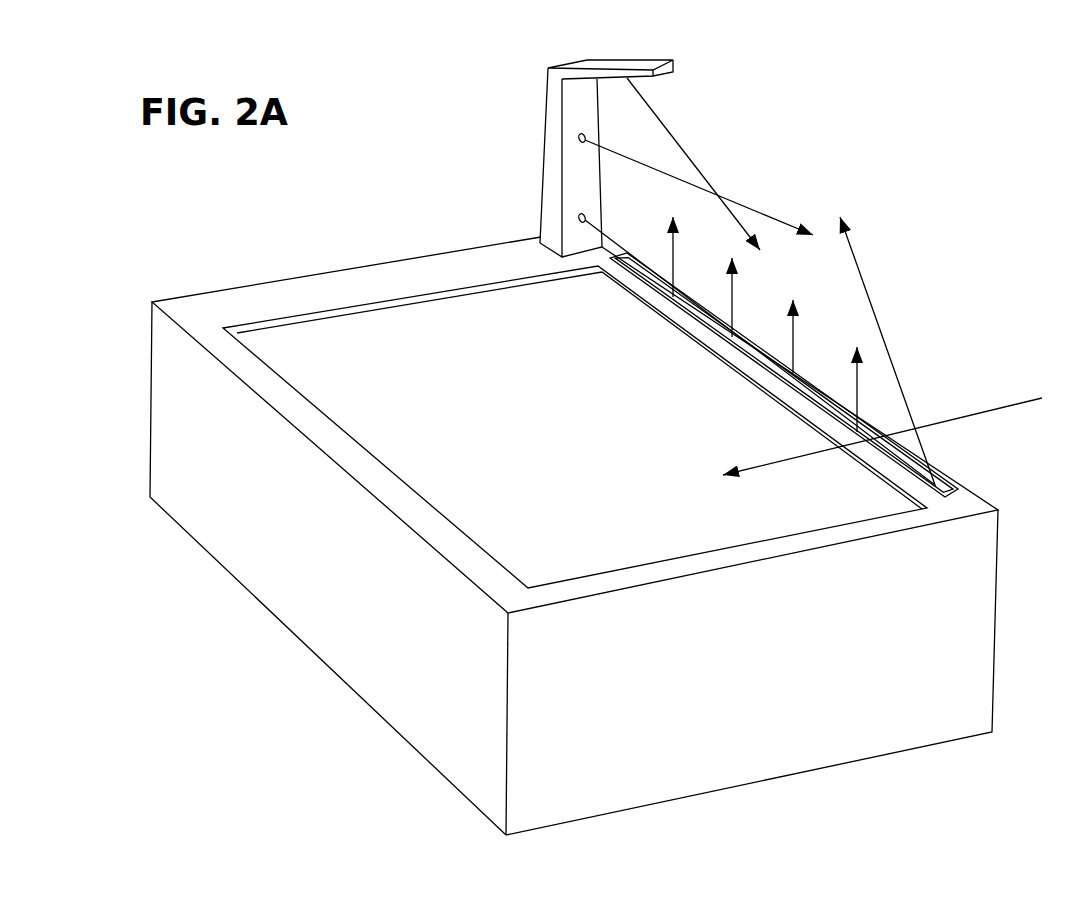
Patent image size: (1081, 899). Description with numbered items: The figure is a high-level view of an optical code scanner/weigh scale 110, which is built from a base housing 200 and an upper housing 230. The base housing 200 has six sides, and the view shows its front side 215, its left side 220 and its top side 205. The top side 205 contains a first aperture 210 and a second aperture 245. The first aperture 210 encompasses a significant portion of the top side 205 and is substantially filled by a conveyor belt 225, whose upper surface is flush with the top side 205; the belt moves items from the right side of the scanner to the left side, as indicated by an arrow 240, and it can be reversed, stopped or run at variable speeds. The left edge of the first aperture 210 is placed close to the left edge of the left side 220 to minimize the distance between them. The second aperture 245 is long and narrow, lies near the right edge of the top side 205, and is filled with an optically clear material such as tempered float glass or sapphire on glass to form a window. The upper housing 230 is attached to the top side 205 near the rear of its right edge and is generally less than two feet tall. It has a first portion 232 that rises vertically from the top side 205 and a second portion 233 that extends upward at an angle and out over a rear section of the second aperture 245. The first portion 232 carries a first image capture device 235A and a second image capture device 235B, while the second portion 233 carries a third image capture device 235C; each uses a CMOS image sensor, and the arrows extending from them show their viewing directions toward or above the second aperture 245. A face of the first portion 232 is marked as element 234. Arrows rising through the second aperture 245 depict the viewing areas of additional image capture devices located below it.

The optical code scanner/weigh scale 110 is at (908, 82).
The base housing 200 is at (148, 428).
The top side 205 is at (235, 298).
The first aperture 210 is at (353, 437).
The front side 215 is at (795, 703).
The left side 220 is at (300, 578).
The conveyor belt 225 is at (405, 358).
The upper housing 230 is at (675, 250).
The first portion 232 is at (549, 160).
The second portion 233 is at (627, 62).
The front face of post 234 is at (576, 105).
The first image capture device 235A is at (579, 218).
The second image capture device 235B is at (579, 139).
The third image capture device 235C is at (652, 78).
The arrow 240 is at (988, 410).
The second aperture 245 is at (950, 487).